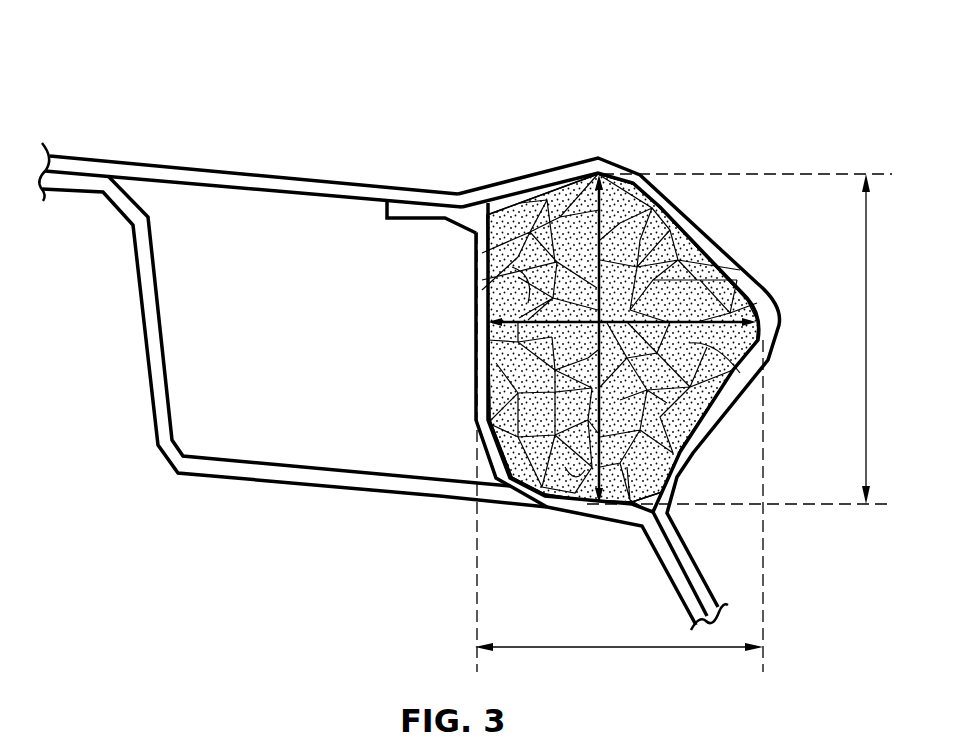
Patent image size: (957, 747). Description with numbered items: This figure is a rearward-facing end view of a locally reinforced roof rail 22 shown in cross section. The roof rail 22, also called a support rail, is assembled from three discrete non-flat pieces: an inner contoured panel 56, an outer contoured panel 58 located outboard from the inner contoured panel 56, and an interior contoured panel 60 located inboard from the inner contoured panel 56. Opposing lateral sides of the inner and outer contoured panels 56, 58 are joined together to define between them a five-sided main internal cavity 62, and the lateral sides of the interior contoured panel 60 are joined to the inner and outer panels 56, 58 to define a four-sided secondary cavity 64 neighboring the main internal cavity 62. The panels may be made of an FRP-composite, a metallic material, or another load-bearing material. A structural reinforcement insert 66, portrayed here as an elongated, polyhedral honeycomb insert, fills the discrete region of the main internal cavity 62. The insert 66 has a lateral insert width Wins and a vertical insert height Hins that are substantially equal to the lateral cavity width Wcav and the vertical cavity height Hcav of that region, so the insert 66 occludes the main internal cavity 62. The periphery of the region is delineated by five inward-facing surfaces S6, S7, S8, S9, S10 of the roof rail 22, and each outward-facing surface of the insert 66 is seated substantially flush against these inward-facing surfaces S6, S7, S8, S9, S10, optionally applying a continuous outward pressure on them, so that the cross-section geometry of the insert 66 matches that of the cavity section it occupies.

The roof rail 22 is at (465, 358).
The outer contoured panel 58 is at (357, 178).
The interior contoured panel 60 is at (150, 368).
The secondary cavity 64 is at (287, 245).
The main internal cavity 62 is at (458, 200).
The inner contoured panel 56 is at (475, 384).
The structural reinforcement insert 66 is at (574, 198).
The inward-facing surface S6 is at (570, 483).
The inward-facing surface S7 is at (760, 340).
The inward-facing surface S8 is at (733, 275).
The inward-facing surface S9 is at (547, 205).
The inward-facing surface S10 is at (480, 352).
The vertical insert height Hins is at (612, 212).
The lateral insert width Wins is at (478, 258).
The vertical cavity height Hcav is at (866, 247).
The lateral cavity width Wcav is at (619, 474).